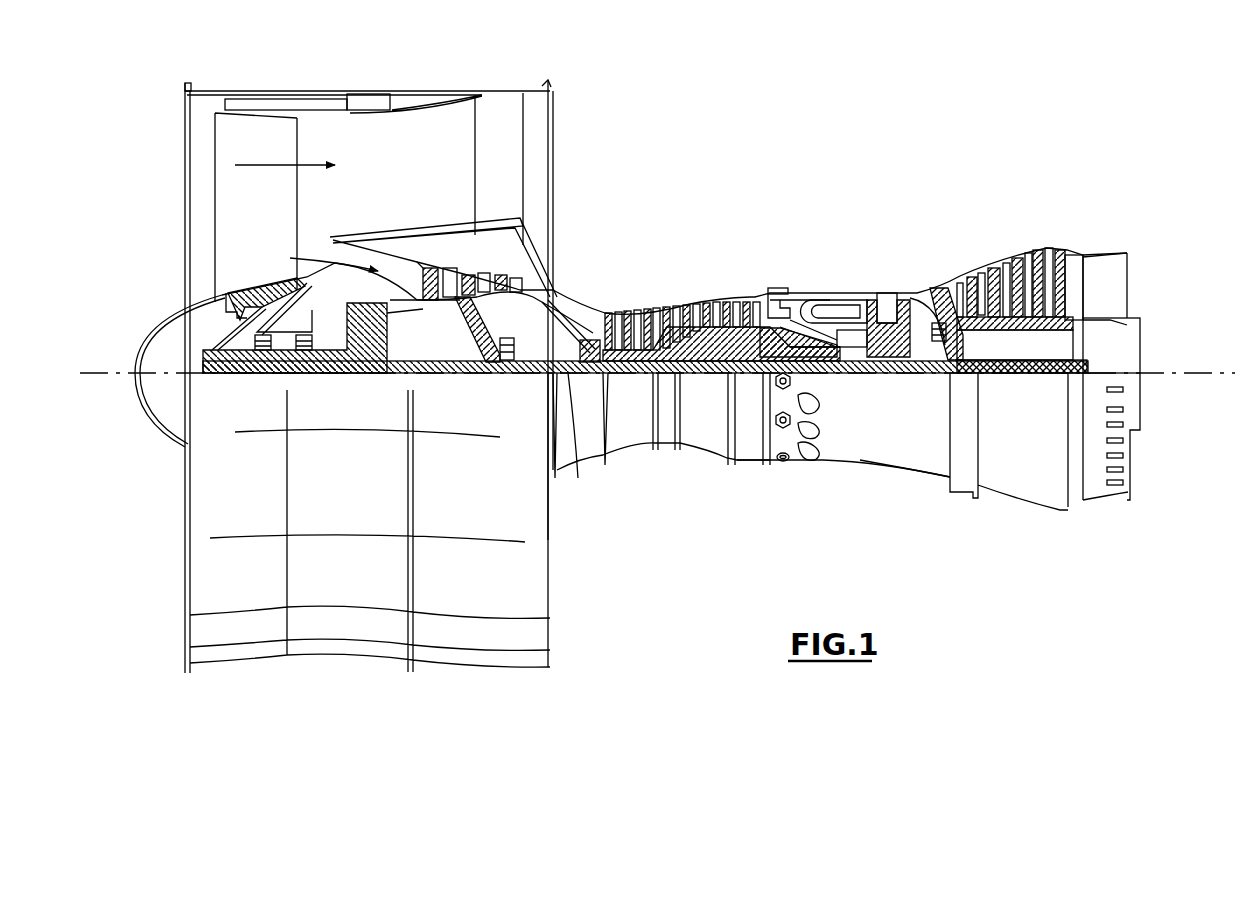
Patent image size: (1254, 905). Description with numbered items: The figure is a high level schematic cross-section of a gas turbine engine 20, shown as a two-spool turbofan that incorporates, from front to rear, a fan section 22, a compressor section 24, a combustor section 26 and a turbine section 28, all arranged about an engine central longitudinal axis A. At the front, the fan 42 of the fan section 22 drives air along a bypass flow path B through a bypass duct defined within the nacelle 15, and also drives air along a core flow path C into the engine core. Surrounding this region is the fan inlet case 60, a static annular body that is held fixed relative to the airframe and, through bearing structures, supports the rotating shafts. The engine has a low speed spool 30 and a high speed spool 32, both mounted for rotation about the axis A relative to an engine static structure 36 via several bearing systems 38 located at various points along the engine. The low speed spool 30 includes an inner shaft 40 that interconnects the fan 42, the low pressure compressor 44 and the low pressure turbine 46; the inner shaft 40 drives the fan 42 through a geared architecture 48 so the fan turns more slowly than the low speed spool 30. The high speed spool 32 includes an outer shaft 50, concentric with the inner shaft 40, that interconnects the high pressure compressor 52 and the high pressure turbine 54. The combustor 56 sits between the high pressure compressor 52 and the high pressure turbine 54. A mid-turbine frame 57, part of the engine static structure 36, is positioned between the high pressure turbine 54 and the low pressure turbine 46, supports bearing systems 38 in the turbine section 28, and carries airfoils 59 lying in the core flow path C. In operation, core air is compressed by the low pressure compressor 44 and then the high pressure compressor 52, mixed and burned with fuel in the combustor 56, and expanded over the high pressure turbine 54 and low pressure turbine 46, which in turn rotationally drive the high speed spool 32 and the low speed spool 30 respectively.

The gas turbine engine 20 is at (832, 138).
The fan section 22 is at (297, 82).
The nacelle 15 is at (370, 93).
The fan inlet case 60 is at (452, 95).
The fan 42 is at (269, 218).
The low pressure compressor 44 is at (468, 284).
The compressor section 24 is at (600, 280).
The high pressure compressor 52 is at (682, 337).
The high speed spool 32 is at (748, 345).
The combustor section 26 is at (820, 270).
The combustor 56 is at (828, 305).
The high pressure turbine 54 is at (888, 293).
The mid-turbine frame 57 is at (930, 278).
The turbine section 28 is at (970, 232).
The low pressure turbine 46 is at (1018, 260).
The airfoils 59 is at (945, 325).
The bearing systems 38 is at (305, 343).
The geared architecture 48 is at (373, 353).
The inner shaft 40 is at (578, 478).
The low speed spool 30 is at (705, 380).
The engine static structure 36 is at (748, 462).
The outer shaft 50 is at (837, 367).
The engine central longitudinal axis A is at (1220, 373).
The bypass flow path B is at (270, 165).
The core flow path C is at (290, 258).